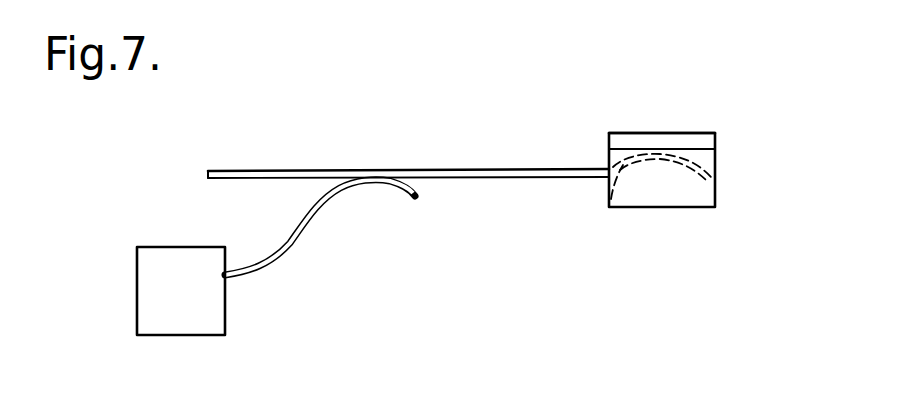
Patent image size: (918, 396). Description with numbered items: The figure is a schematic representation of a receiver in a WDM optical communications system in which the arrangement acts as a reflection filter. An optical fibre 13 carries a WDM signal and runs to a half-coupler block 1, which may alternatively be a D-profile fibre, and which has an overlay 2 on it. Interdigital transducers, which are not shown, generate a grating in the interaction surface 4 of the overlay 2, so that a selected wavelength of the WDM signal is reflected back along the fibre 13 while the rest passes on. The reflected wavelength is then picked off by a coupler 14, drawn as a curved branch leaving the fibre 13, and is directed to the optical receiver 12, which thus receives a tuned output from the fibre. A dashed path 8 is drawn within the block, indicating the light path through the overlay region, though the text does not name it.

The half-coupler block 1 is at (676, 198).
The overlay 2 is at (707, 142).
The interaction surface 4 is at (695, 150).
The light guide 8 is at (604, 206).
The optical receiver 12 is at (218, 325).
The optical fibre 13 is at (242, 171).
The coupler 14 is at (401, 190).